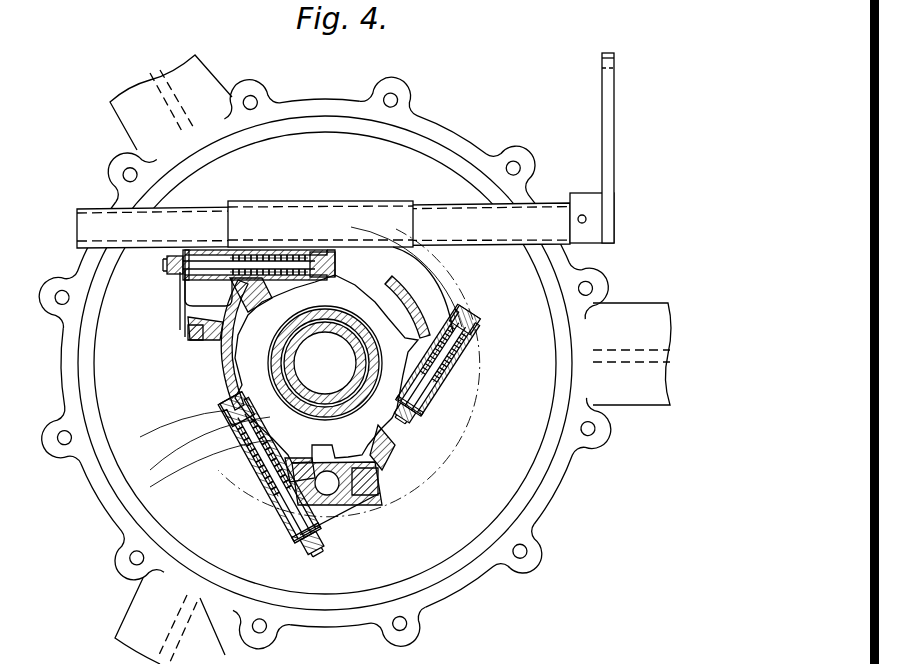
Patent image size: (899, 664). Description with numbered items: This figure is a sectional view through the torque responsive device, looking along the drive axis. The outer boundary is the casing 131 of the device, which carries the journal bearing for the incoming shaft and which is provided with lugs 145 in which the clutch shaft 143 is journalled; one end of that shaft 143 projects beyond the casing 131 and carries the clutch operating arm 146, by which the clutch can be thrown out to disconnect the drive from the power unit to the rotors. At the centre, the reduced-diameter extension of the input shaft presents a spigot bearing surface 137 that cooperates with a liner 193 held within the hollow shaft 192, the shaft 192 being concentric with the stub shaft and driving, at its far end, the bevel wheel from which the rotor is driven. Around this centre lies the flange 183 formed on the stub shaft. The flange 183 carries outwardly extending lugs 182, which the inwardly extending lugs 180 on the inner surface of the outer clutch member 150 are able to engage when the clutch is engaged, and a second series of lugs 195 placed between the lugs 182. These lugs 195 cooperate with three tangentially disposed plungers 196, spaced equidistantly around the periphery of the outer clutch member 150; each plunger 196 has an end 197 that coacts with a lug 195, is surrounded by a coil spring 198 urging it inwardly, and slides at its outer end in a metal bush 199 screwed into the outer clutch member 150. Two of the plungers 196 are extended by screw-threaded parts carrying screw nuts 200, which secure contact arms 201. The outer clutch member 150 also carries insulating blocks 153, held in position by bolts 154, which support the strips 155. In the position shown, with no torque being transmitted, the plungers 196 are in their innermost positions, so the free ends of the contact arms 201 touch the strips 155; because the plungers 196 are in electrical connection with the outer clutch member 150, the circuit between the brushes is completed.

The casing 131 is at (326, 108).
The spigot bearing surface 137 is at (343, 393).
The shaft 143 is at (462, 220).
The lugs 145 is at (98, 208).
The clutch operating arm 146 is at (603, 121).
The outer clutch member 150 is at (433, 252).
The insulating blocks 153 is at (190, 342).
The bolts 154 is at (203, 345).
The strips 155 is at (188, 333).
The lugs 180 is at (447, 296).
The lugs 182 is at (256, 311).
The flange 183 is at (245, 430).
The shaft 192 is at (292, 427).
The liner 193 is at (302, 333).
The lugs 195 is at (403, 462).
The plungers 196 is at (268, 252).
The end 197 is at (330, 250).
The coil springs 198 is at (289, 250).
The metal bush 199 is at (212, 248).
The screw nuts 200 is at (168, 265).
The contact arms 201 is at (185, 307).